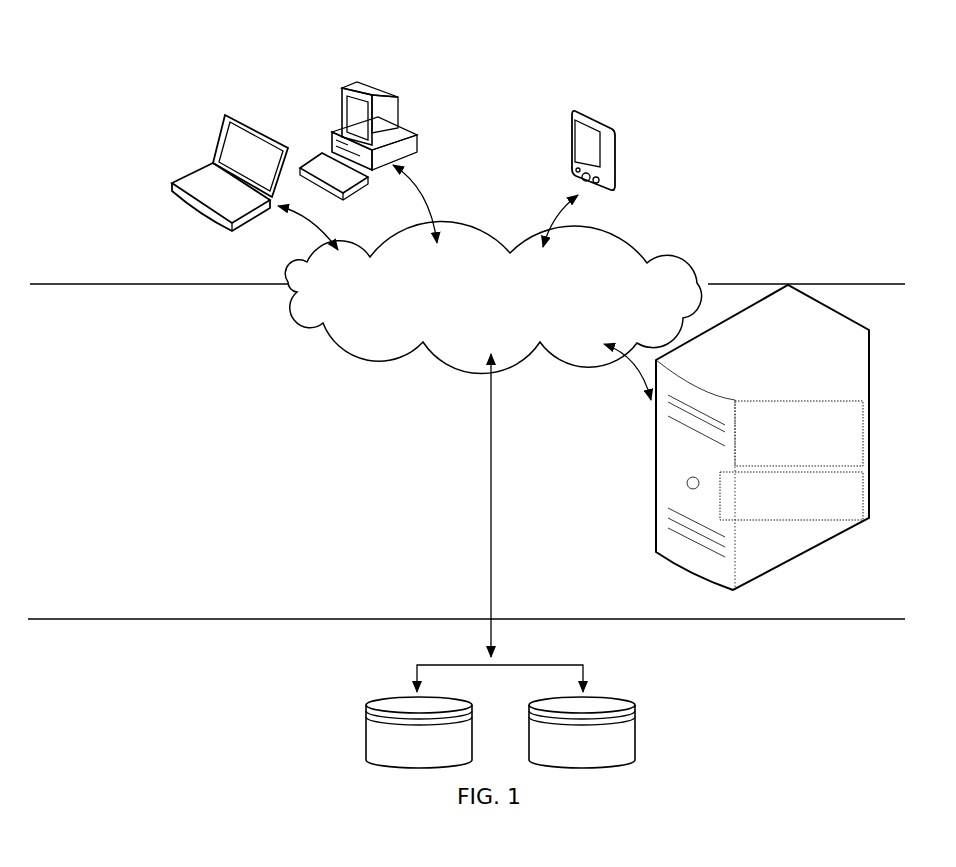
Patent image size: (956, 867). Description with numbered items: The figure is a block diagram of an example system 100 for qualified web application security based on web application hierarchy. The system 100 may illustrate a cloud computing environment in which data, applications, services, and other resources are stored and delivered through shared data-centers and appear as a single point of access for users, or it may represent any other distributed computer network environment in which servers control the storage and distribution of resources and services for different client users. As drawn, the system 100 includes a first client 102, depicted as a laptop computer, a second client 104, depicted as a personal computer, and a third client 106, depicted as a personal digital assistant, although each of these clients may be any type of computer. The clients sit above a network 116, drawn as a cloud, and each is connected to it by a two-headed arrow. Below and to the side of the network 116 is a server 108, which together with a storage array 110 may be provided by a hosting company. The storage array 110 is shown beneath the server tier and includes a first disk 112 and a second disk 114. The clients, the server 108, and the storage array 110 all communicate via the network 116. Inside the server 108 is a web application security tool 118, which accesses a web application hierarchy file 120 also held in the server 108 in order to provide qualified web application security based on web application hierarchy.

The system 100 is at (466, 96).
The first client 102 is at (222, 116).
The second client 104 is at (341, 87).
The third client 106 is at (589, 110).
The server 108 is at (655, 532).
The storage array 110 is at (614, 561).
The first disk 112 is at (378, 700).
The second disk 114 is at (536, 700).
The network 116 is at (493, 298).
The web application security tool 118 is at (799, 433).
The web application hierarchy file 120 is at (794, 496).